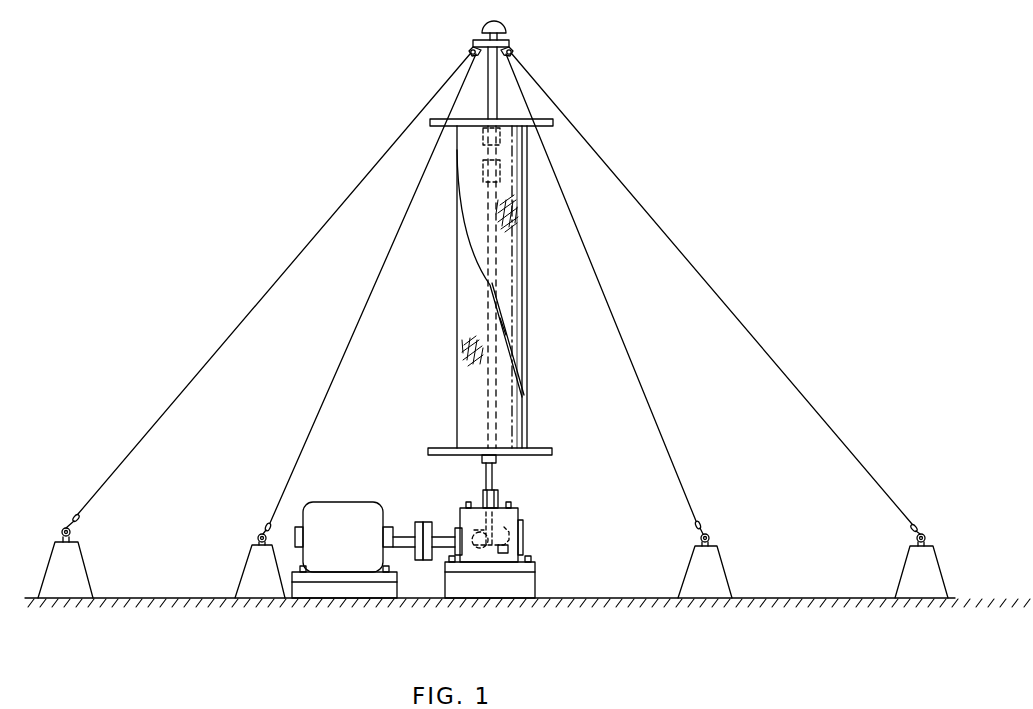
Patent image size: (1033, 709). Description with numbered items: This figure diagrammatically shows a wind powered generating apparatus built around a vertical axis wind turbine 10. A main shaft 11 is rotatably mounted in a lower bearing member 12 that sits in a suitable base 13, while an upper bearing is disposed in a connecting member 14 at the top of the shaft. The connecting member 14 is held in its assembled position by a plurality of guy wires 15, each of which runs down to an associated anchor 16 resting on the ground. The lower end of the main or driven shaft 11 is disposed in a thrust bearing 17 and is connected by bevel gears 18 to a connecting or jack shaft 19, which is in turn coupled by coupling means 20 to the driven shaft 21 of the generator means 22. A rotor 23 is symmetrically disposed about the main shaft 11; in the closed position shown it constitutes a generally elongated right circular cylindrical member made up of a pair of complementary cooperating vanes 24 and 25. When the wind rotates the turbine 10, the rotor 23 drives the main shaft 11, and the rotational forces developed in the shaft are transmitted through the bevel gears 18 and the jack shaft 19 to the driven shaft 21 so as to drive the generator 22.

The vertical axis wind turbine 10 is at (527, 257).
The main shaft 11 is at (494, 479).
The lower bearing member 12 is at (499, 498).
The base 13 is at (508, 531).
The connecting member 14 is at (512, 43).
The guy wires 15 is at (342, 205).
The anchors 16 is at (62, 565).
The thrust bearing 17 is at (485, 565).
The bevel gears 18 is at (460, 528).
The jack shaft 19 is at (449, 545).
The coupling means 20 is at (425, 525).
The driven shaft 21 is at (409, 545).
The generator means 22 is at (353, 520).
The rotor 23 is at (505, 188).
The vane 24 is at (503, 312).
The vane 25 is at (473, 365).